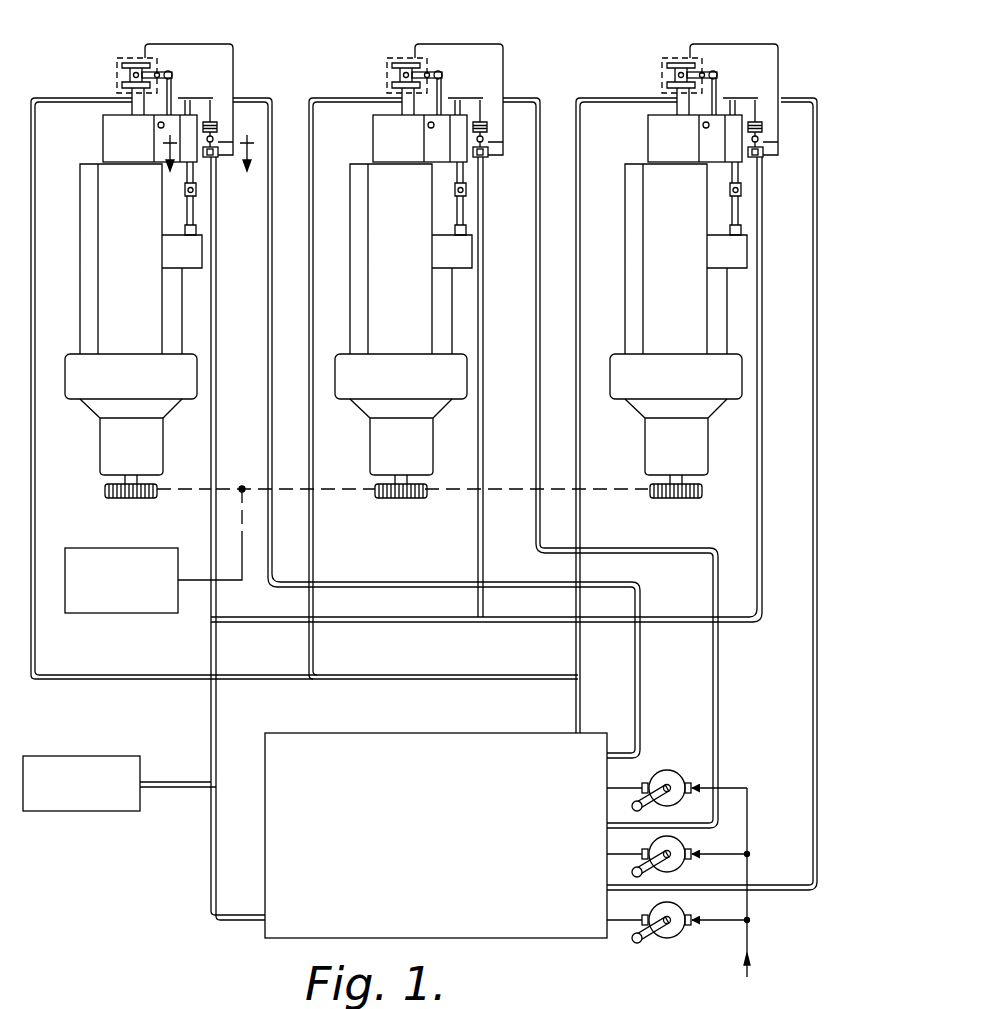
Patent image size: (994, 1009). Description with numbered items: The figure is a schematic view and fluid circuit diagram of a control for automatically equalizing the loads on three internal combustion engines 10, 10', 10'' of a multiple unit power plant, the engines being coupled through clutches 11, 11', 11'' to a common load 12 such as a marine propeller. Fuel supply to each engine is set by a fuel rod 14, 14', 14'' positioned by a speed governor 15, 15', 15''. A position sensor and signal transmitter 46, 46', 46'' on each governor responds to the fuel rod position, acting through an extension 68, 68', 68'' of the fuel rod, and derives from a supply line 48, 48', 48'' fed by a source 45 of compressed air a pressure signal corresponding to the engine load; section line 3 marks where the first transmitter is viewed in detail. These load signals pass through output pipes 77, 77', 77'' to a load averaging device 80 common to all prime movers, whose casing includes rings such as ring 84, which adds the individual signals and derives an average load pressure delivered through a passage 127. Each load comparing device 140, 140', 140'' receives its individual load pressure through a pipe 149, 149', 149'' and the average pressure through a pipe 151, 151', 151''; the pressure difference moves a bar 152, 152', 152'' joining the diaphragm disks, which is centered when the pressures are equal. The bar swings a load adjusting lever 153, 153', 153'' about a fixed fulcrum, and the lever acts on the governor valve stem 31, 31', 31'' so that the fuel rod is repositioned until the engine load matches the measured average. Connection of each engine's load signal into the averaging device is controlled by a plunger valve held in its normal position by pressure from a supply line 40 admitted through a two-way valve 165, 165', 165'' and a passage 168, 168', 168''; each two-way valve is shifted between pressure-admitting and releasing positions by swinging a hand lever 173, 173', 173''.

The section line 3 is at (200, 169).
The internal combustion engine 10 is at (133, 281).
The internal combustion engine 10' is at (403, 281).
The internal combustion engine 10'' is at (678, 281).
The clutch 11 is at (131, 448).
The clutch 11' is at (401, 448).
The clutch 11'' is at (676, 448).
The common load 12 is at (130, 613).
The fuel rod 14 is at (153, 198).
The fuel rod 14' is at (423, 198).
The fuel rod 14'' is at (695, 198).
The speed governor 15 is at (124, 138).
The speed governor 15' is at (394, 139).
The speed governor 15'' is at (667, 138).
The governor valve stem 31 is at (140, 111).
The governor valve stem 31' is at (410, 112).
The governor valve stem 31'' is at (683, 112).
The supply line 40 is at (750, 942).
The source of pressure fluid 45 is at (72, 811).
The position sensor and signal transmitter 46 is at (233, 190).
The signal transmitter 46' is at (503, 176).
The signal transmitter 46'' is at (782, 178).
The supply line 48 is at (446, 538).
The supply line 48' is at (506, 387).
The supply line 48'' is at (728, 389).
The fuel rod extension 68 is at (204, 107).
The fuel rod extension 68' is at (476, 106).
The fuel rod extension 68'' is at (780, 98).
The output pipe 77 is at (464, 410).
The output pipe 77' is at (610, 445).
The output pipe 77'' is at (738, 493).
The load averaging device 80 is at (347, 743).
The ring 84 is at (243, 996).
The passage 127 is at (575, 717).
The load comparing device 140 is at (106, 51).
The load comparing device 140' is at (378, 51).
The load comparing device 140'' is at (652, 49).
The pipe 149 is at (201, 81).
The pipe 149' is at (469, 77).
The pipe 149'' is at (748, 79).
The pipe 151 is at (304, 388).
The pipe 151' is at (355, 388).
The pipe 151'' is at (626, 360).
The bar 152 is at (102, 88).
The bar 152' is at (368, 88).
The bar 152'' is at (645, 86).
The lever 153 is at (185, 62).
The lever 153' is at (458, 63).
The lever 153'' is at (736, 62).
The two-way valve 165 is at (716, 769).
The two-way valve 165' is at (731, 836).
The two-way valve 165'' is at (698, 947).
The passage 168 is at (593, 774).
The passage 168' is at (590, 841).
The passage 168'' is at (593, 905).
The hand lever 173 is at (606, 800).
The hand lever 173' is at (601, 868).
The hand lever 173'' is at (619, 948).